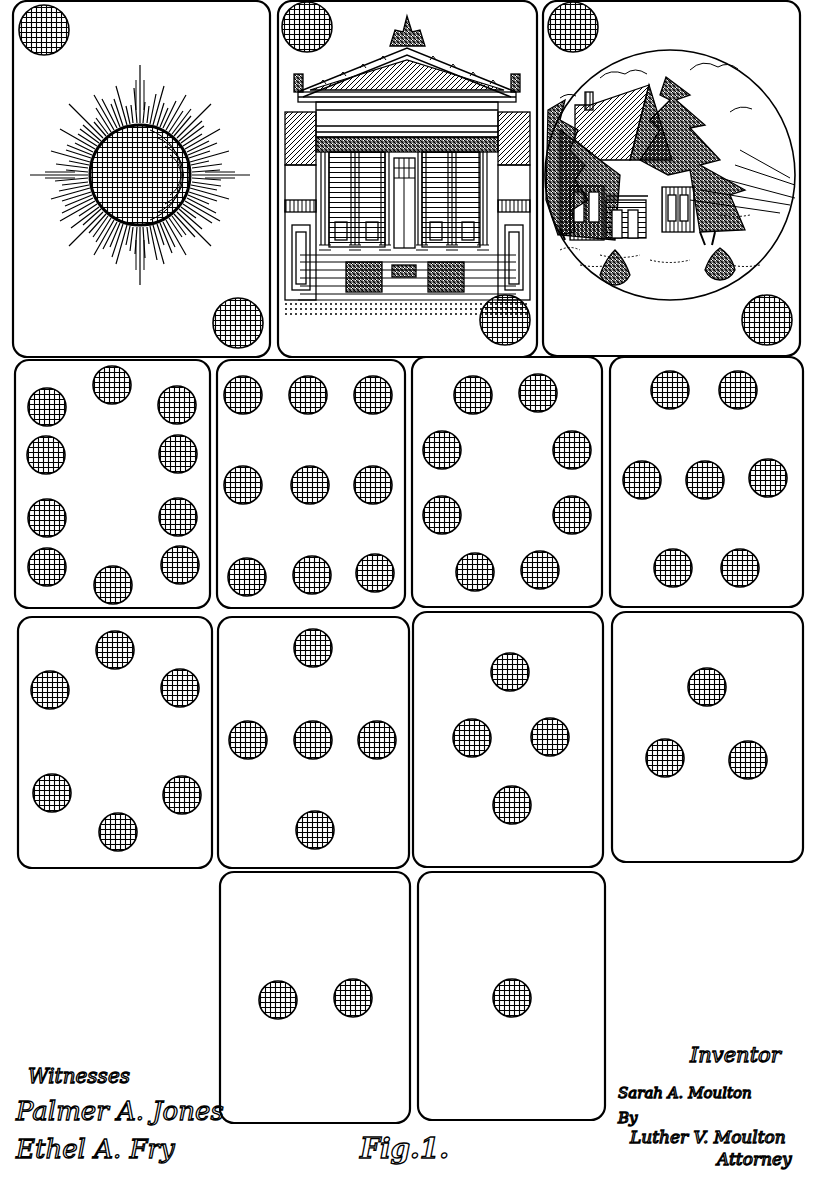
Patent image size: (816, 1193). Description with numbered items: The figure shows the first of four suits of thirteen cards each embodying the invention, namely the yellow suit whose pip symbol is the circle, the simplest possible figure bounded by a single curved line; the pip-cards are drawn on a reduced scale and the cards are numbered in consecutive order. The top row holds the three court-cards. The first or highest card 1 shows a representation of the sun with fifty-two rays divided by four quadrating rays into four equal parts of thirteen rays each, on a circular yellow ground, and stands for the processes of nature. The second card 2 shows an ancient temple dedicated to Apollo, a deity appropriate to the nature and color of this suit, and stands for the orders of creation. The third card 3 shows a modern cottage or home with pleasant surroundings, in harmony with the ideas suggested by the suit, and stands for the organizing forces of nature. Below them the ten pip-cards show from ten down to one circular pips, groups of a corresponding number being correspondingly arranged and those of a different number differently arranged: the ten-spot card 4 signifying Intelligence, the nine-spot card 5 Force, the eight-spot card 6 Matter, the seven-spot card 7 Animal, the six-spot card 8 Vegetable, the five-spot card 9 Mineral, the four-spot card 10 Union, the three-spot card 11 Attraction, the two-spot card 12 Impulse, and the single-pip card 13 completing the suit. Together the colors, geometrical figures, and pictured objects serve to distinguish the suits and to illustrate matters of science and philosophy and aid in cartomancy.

The sun card 1 is at (141, 179).
The temple of Apollo card 2 is at (407, 179).
The home card 3 is at (671, 178).
The ten-spot pip-card 4 is at (112, 484).
The nine-spot pip-card 5 is at (311, 484).
The eight-spot pip-card 6 is at (507, 482).
The seven-spot pip-card 7 is at (706, 482).
The six-spot pip-card 8 is at (115, 742).
The five-spot pip-card 9 is at (313, 742).
The four-spot pip-card 10 is at (508, 739).
The three-spot pip-card 11 is at (707, 737).
The two-spot pip-card 12 is at (315, 997).
The one-spot pip-card 13 is at (511, 996).